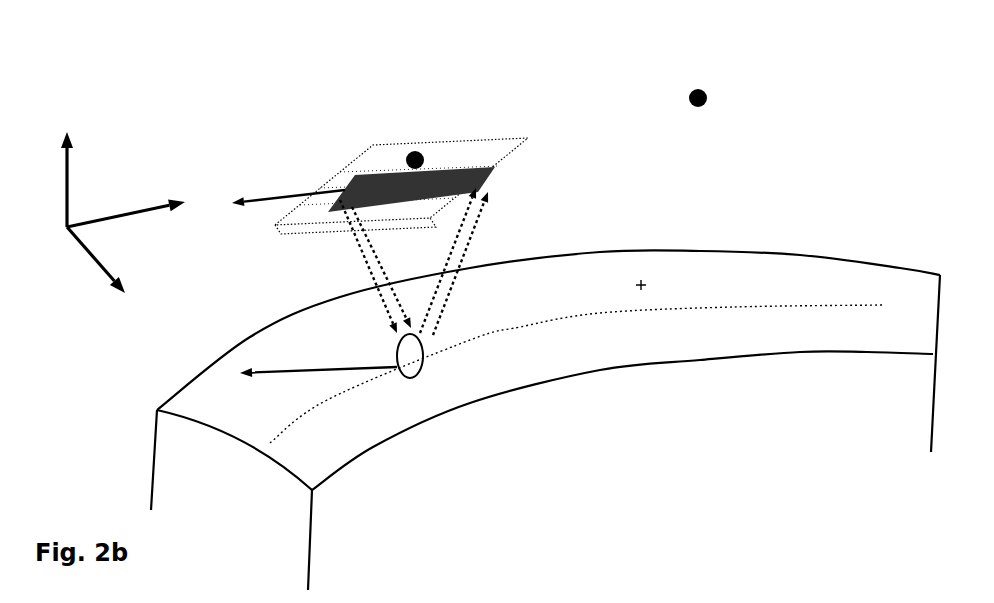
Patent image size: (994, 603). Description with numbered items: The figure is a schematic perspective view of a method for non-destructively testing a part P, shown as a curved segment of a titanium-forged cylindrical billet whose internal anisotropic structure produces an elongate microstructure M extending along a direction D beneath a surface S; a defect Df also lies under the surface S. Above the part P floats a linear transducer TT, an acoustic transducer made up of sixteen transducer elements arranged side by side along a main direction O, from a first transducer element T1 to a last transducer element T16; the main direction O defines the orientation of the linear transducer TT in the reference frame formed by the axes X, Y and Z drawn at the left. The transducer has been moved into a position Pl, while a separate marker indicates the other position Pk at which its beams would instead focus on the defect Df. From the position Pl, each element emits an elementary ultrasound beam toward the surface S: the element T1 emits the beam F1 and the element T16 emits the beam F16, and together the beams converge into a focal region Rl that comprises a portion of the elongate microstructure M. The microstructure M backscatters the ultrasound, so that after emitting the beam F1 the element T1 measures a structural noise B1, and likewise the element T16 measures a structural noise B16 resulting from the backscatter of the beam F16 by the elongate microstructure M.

The elongate microstructure M is at (793, 313).
The surface S is at (897, 272).
The part P is at (845, 293).
The defect Df is at (641, 284).
The linear transducer TT is at (464, 108).
The transducer element T1 is at (347, 203).
The last transducer element T16 is at (474, 182).
The position Pl is at (412, 150).
The position Pk is at (691, 90).
The main direction O is at (252, 200).
The direction D is at (287, 368).
The elementary ultrasound beam F1 is at (357, 248).
The structural noise B1 is at (377, 257).
The elementary ultrasound beam F16 is at (453, 220).
The structural noise B16 is at (458, 250).
The focal region Rl is at (413, 378).
The reference frame axis X is at (135, 226).
The reference frame axis Y is at (96, 272).
The reference frame axis Z is at (53, 176).